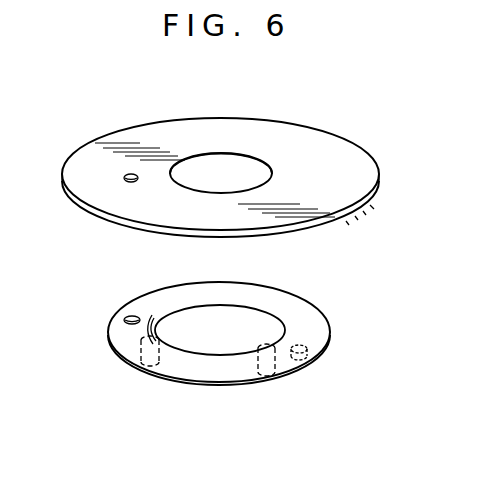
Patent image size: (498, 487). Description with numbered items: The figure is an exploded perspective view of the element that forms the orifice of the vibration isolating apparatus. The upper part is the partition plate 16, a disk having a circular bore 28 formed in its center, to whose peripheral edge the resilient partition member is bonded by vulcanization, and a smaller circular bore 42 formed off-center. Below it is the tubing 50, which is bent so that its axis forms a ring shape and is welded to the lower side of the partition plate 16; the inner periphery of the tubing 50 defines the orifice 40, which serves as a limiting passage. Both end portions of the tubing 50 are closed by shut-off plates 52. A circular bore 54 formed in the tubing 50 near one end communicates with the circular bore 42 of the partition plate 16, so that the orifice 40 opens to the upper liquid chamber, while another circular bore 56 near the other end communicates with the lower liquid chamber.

The partition plate 16 is at (360, 179).
The circular bore 28 is at (258, 164).
The circular bore 42 is at (131, 176).
The tubing 50 is at (237, 283).
The orifice 40 is at (200, 299).
The circular bore 54 is at (132, 315).
The shut-off plates 52 is at (148, 368).
The circular bore 56 is at (303, 358).